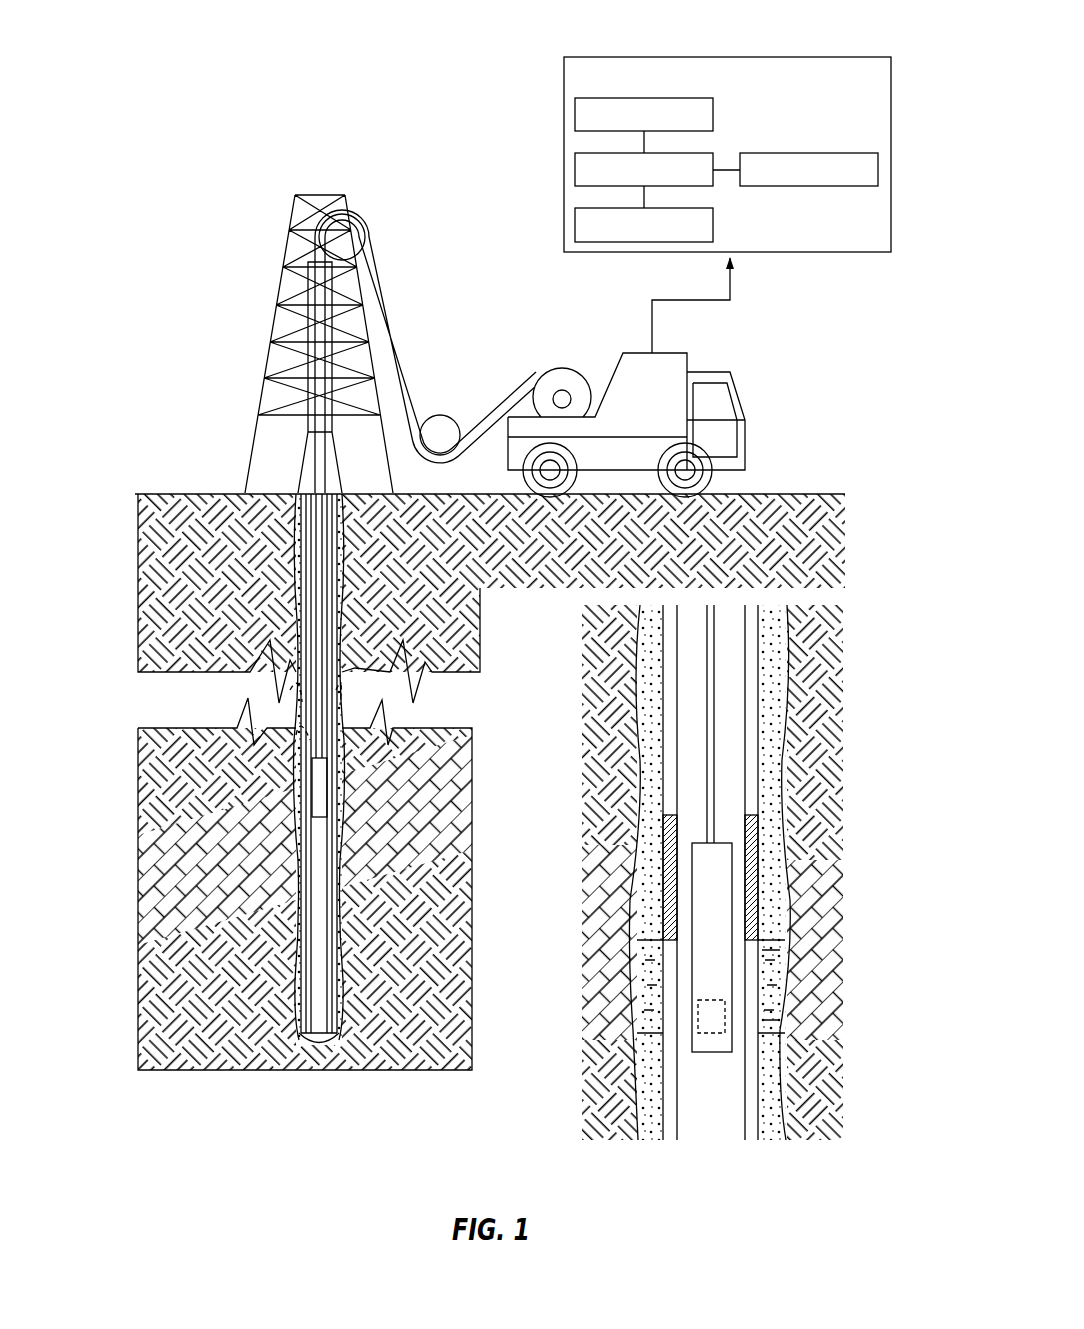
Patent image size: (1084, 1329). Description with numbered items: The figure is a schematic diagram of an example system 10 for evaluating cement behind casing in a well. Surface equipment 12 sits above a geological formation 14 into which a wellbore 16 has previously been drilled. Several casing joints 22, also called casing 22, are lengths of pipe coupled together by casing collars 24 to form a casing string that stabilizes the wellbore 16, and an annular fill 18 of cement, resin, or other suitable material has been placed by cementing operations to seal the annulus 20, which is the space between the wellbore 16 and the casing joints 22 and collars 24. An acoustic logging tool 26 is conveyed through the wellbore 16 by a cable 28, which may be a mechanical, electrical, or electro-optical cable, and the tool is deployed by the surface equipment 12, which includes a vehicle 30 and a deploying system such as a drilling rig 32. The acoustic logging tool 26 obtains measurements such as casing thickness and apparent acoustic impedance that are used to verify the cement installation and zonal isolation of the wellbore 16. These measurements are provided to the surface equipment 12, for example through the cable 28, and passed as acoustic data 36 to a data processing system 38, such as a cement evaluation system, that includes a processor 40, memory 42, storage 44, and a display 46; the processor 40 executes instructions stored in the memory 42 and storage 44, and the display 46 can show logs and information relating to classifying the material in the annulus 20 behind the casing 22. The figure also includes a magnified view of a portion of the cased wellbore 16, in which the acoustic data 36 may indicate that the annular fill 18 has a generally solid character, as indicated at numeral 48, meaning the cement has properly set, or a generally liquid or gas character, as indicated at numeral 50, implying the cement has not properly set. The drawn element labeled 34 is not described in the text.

The system 10 is at (123, 1013).
The surface equipment 12 is at (509, 256).
The geological formation 14 is at (158, 826).
The wellbore 16 is at (297, 548).
The annular fill 18 is at (297, 575).
The annulus 20 is at (297, 603).
The casing joints 22 is at (297, 899).
The casing collars 24 is at (345, 1003).
The acoustic logging tool 26 is at (308, 775).
The cable 28 is at (402, 338).
The vehicle 30 is at (618, 353).
The drilling rig 32 is at (270, 280).
The flow channel 34 is at (755, 970).
The acoustic data 36 is at (730, 283).
The data processing system 38 is at (640, 56).
The processor 40 is at (705, 151).
The memory 42 is at (575, 110).
The storage 44 is at (713, 228).
The display 46 is at (800, 152).
The solid cement character 48 is at (770, 720).
The liquid or gas character 50 is at (773, 993).